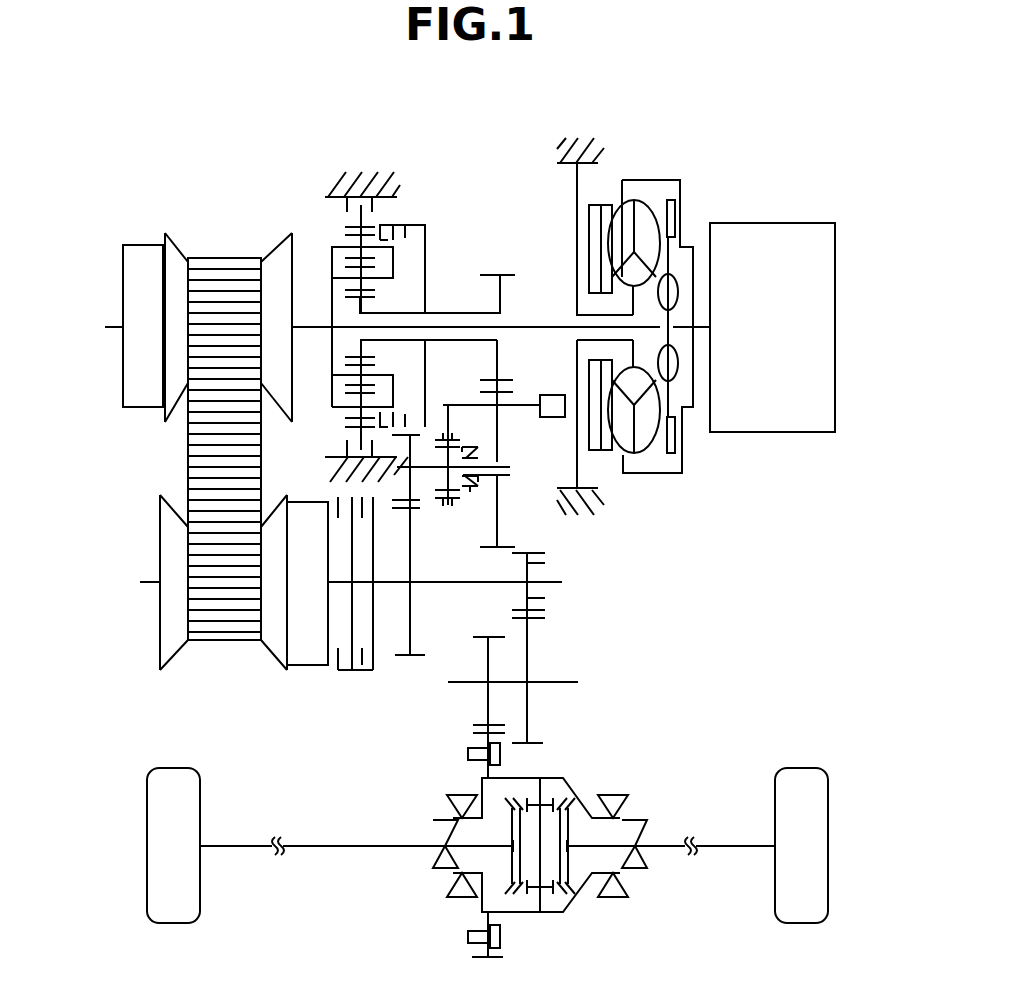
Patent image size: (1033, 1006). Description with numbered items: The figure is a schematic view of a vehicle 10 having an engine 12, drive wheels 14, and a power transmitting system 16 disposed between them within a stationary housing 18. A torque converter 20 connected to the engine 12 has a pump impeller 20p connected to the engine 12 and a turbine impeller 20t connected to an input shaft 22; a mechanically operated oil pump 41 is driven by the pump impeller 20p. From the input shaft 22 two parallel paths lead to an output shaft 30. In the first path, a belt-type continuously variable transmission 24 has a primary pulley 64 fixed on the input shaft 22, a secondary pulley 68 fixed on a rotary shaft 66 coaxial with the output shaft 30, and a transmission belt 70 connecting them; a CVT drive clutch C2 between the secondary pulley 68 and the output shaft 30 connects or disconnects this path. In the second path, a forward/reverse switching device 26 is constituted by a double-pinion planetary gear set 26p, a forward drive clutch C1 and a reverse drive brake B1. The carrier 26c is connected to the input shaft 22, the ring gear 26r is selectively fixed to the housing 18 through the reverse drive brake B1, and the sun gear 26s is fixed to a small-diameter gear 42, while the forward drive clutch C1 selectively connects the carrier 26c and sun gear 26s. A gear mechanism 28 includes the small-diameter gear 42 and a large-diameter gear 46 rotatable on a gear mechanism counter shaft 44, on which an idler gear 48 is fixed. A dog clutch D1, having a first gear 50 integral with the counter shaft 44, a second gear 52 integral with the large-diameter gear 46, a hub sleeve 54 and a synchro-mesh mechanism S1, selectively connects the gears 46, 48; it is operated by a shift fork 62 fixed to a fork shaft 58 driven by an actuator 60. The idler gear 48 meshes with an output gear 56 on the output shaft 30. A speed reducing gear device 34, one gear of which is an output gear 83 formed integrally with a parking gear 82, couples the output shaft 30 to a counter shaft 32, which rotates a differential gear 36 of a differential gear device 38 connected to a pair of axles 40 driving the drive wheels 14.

The vehicle 10 is at (737, 95).
The engine 12 is at (775, 235).
The drive wheels 14 is at (178, 773).
The power transmitting system 16 is at (641, 290).
The housing 18 is at (358, 183).
The torque converter 20 is at (649, 301).
The pump impeller 20p is at (622, 220).
The turbine impeller 20t is at (650, 222).
The input shaft 22 is at (515, 325).
The continuously variable transmission 24 is at (212, 210).
The forward/reverse switching device 26 is at (391, 298).
The ring gear 26r is at (345, 227).
The sun gear 26s is at (368, 356).
The carrier 26c is at (408, 283).
The planetary gear set 26p is at (345, 433).
The gear mechanism 28 is at (521, 441).
The output shaft 30 is at (446, 583).
The counter shaft 32 is at (575, 682).
The speed reducing gear device 34 is at (569, 632).
The differential gear 36 is at (483, 637).
The differential gear device 38 is at (563, 770).
The axles 40 is at (343, 846).
The oil pump 41 is at (600, 205).
The small-diameter gear 42 is at (500, 272).
The gear mechanism counter shaft 44 is at (510, 476).
The large-diameter gear 46 is at (497, 547).
The idler gear 48 is at (408, 504).
The first gear 50 is at (443, 500).
The second gear 52 is at (473, 488).
The hub sleeve 54 is at (455, 503).
The output gear 56 is at (405, 656).
The fork shaft 58 is at (520, 398).
The actuator 60 is at (553, 417).
The shift fork 62 is at (448, 428).
The primary pulley 64 is at (115, 288).
The rotary shaft 66 is at (140, 583).
The secondary pulley 68 is at (147, 552).
The transmission belt 70 is at (225, 642).
The parking gear 82 is at (545, 563).
The output gear 83 is at (530, 553).
The reverse drive brake B1 is at (349, 327).
The forward drive clutch C1 is at (402, 318).
The CVT drive clutch C2 is at (355, 598).
The dog clutch D1 is at (468, 440).
The synchro-mesh mechanism S1 is at (480, 430).